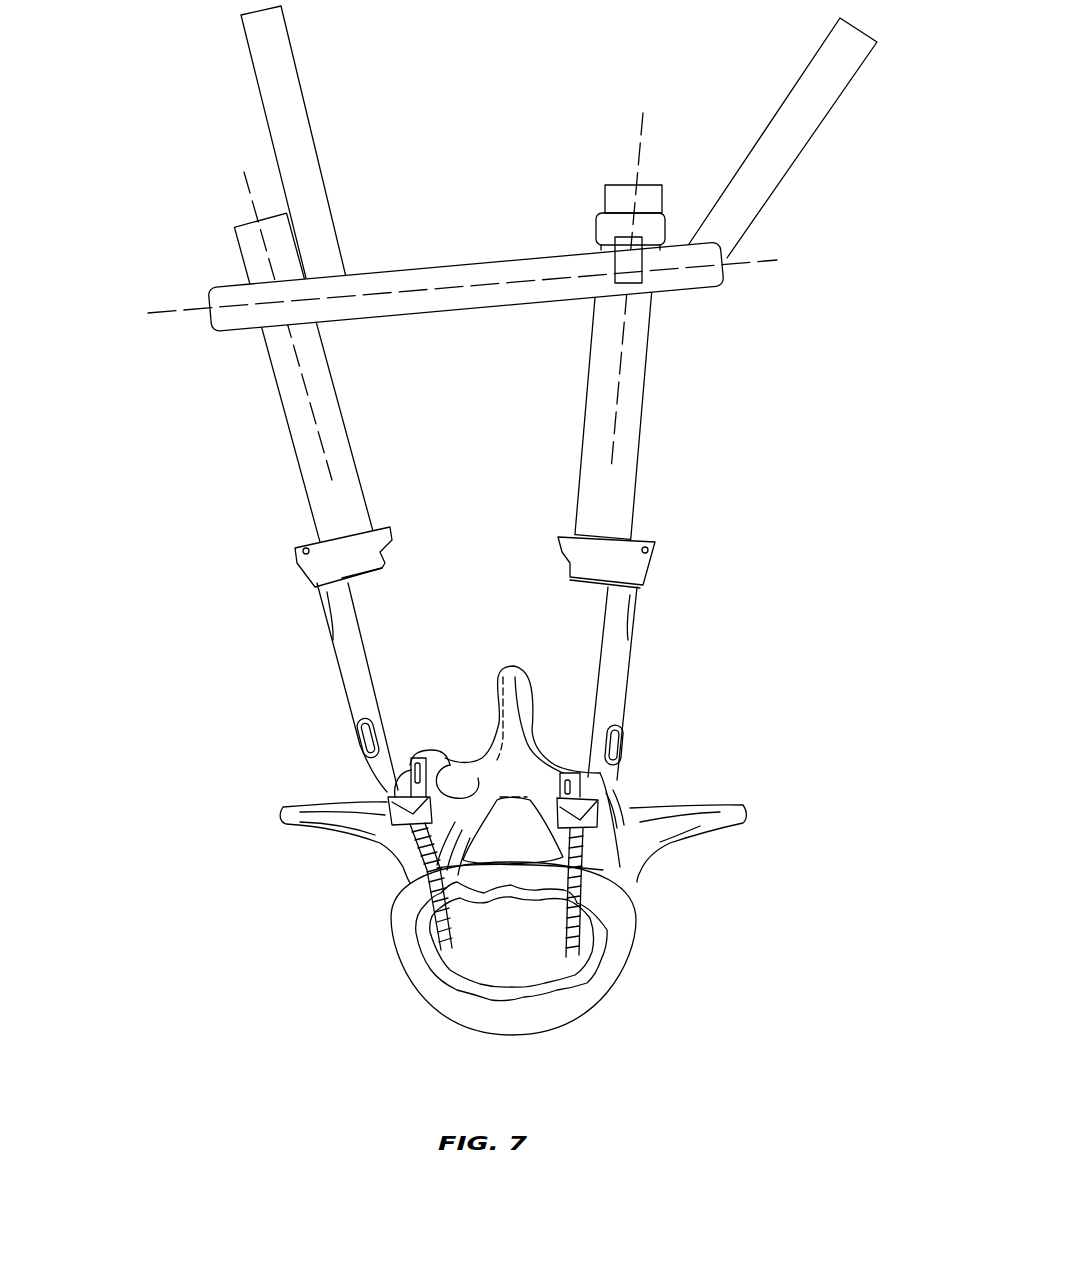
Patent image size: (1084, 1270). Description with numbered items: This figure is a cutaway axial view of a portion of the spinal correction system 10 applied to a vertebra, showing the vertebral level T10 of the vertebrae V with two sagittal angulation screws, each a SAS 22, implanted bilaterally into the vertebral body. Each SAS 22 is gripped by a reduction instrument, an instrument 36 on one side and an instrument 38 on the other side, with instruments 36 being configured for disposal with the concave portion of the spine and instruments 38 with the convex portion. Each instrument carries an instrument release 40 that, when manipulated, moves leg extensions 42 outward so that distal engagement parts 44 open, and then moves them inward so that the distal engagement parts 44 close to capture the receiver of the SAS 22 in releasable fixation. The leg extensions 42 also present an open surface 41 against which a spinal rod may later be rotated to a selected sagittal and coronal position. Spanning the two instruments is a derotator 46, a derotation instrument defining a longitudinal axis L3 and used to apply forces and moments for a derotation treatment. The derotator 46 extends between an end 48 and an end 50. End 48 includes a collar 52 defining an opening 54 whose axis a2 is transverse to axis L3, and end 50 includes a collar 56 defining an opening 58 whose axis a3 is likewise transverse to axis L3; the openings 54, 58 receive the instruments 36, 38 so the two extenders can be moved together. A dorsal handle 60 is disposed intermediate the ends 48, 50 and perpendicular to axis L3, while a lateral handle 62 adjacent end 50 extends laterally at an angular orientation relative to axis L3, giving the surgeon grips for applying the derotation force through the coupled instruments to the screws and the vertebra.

The spinal correction system 10 is at (494, 481).
The sagittal angulation screw 22 is at (400, 812).
The reduction instrument 36 is at (438, 399).
The reduction instrument 38 is at (744, 278).
The instrument release 40 is at (332, 560).
The open surface 41 is at (367, 658).
The leg extension 42 is at (485, 687).
The distal engagement part 44 is at (385, 777).
The derotator 46 is at (463, 282).
The end 48 is at (228, 318).
The end 50 is at (708, 280).
The collar 52 is at (262, 293).
The opening 54 is at (280, 278).
The collar 56 is at (652, 232).
The opening 58 is at (602, 213).
The dorsal handle 60 is at (285, 110).
The lateral handle 62 is at (813, 97).
The axis a2 is at (278, 311).
The axis a3 is at (634, 279).
The longitudinal axis L3 is at (463, 289).
The tenth thoracic vertebra T10 is at (615, 950).
The vertebrae V is at (588, 992).